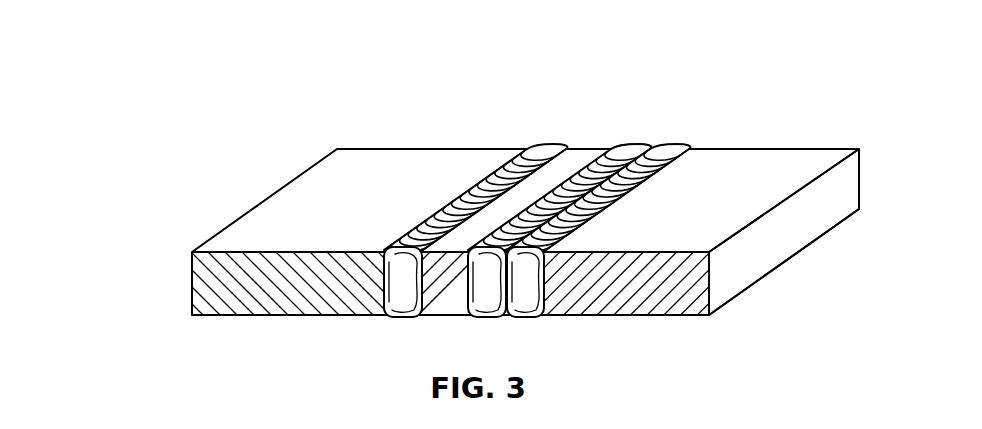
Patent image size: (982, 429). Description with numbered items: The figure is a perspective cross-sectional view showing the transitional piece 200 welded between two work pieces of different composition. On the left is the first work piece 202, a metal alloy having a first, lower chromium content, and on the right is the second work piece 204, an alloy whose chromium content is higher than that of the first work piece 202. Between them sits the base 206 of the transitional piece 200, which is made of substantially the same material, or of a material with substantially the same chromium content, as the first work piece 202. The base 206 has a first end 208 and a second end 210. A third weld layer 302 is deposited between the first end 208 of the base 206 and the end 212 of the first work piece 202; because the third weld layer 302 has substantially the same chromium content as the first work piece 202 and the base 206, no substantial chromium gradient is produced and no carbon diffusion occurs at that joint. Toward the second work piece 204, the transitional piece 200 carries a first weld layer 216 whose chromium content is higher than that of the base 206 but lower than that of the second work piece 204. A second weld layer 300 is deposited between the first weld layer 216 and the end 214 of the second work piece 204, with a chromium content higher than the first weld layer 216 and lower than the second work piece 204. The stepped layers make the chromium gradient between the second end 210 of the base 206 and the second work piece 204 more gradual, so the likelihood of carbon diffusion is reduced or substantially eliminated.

The transitional piece 200 is at (140, 32).
The first work piece 202 is at (253, 227).
The second work piece 204 is at (793, 165).
The base 206 is at (575, 162).
The first end 208 is at (507, 178).
The second end 210 is at (563, 187).
The end of the first work piece 212 is at (395, 243).
The end of the second work piece 214 is at (655, 173).
The first weld layer 216 is at (617, 157).
The second weld layer 300 is at (667, 152).
The third weld layer 302 is at (450, 222).